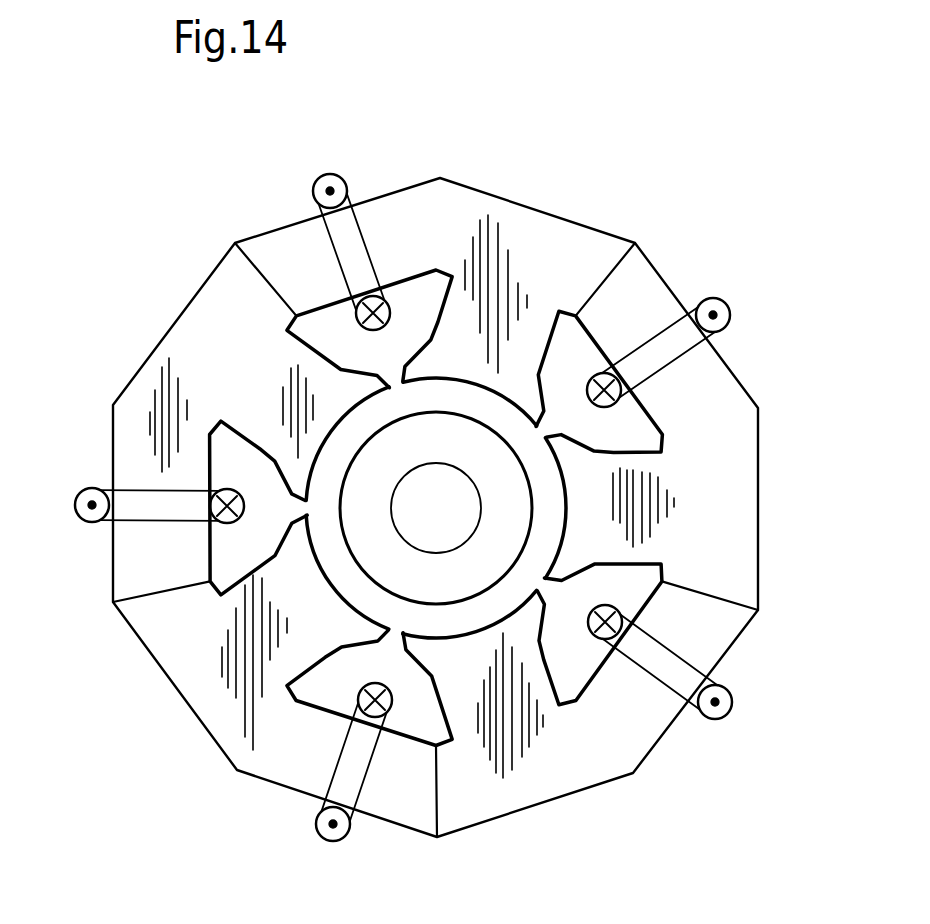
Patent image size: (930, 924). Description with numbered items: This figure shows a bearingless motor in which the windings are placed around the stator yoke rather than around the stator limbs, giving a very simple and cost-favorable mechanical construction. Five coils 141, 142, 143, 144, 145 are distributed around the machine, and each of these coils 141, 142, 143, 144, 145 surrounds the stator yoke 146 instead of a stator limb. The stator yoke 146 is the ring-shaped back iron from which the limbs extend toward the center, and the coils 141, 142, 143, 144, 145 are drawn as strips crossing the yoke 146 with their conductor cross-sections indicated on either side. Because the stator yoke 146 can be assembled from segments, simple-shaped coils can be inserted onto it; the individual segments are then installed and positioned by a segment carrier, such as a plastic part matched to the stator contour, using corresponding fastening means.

The coil 141 is at (732, 702).
The coil 142 is at (728, 312).
The coil 143 is at (338, 177).
The coil 144 is at (75, 508).
The coil 145 is at (328, 835).
The stator yoke 146 is at (740, 493).